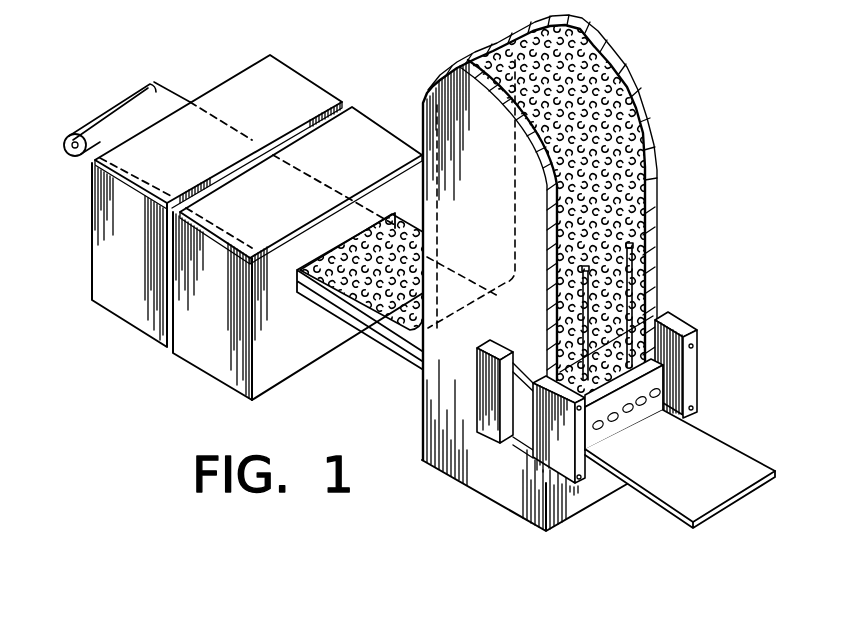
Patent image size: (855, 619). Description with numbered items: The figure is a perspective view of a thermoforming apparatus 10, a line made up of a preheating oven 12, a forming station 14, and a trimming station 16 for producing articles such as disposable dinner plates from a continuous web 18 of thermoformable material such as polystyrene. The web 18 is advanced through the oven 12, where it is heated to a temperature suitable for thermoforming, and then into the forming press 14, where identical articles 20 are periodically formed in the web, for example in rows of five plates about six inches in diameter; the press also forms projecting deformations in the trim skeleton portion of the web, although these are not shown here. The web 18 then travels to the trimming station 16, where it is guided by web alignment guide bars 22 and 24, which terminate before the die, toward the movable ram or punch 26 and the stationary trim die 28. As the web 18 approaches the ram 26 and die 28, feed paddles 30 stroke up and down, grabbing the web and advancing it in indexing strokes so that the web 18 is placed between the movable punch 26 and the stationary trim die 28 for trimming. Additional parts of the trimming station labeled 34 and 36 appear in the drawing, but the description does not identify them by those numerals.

The thermoforming apparatus 10 is at (250, 49).
The preheating oven 12 is at (288, 78).
The forming station 14 is at (366, 132).
The trimming station 16 is at (422, 104).
The continuous web 18 is at (70, 150).
The identical articles 20 is at (530, 40).
The web alignment guide bar 22 is at (578, 280).
The web alignment guide bar 24 is at (650, 230).
The movable ram or punch 26 is at (500, 441).
The stationary trim die 28 is at (641, 411).
The feed paddles 30 is at (660, 312).
The guide rod 34 is at (583, 368).
The guide posts 36 is at (646, 212).